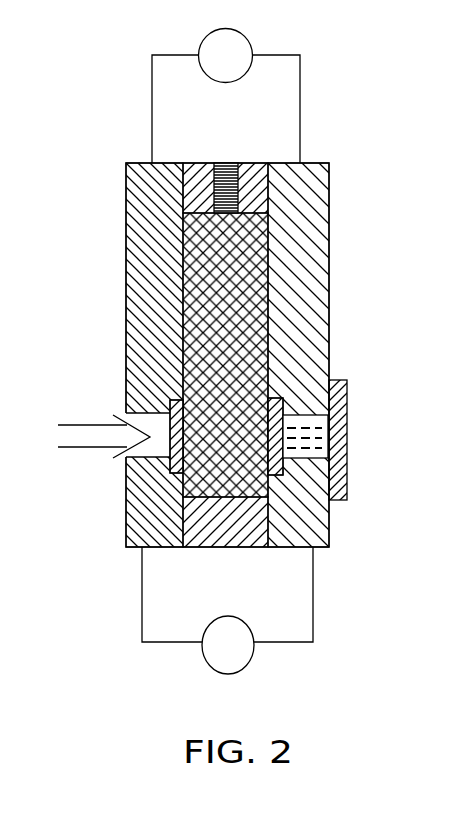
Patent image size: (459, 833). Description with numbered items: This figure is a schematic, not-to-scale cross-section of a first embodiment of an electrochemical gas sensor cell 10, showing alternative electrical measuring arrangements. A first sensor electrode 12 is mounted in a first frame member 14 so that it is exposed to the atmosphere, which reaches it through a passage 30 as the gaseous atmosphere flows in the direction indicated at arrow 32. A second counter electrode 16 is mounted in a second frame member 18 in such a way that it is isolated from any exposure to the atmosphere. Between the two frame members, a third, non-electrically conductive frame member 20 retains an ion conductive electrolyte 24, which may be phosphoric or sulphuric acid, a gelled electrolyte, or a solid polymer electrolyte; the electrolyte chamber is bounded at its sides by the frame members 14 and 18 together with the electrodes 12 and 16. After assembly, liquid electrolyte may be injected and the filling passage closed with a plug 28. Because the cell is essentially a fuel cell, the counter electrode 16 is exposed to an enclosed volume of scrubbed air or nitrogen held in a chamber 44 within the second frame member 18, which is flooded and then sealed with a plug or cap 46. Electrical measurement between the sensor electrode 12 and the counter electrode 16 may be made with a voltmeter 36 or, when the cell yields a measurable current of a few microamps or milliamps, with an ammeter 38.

The electrochemical gas sensor cell 10 is at (338, 96).
The first sensor electrode 12 is at (177, 460).
The first frame member 14 is at (128, 245).
The second counter electrode 16 is at (284, 404).
The second frame member 18 is at (328, 296).
The third frame member 20 is at (237, 540).
The ion conductive electrolyte 24 is at (258, 246).
The plug 28 is at (223, 160).
The passage 30 is at (140, 403).
The arrow 32 is at (88, 422).
The voltmeter 36 is at (207, 33).
The ammeter 38 is at (240, 673).
The chamber 44 is at (325, 460).
The plug or cap 46 is at (348, 420).